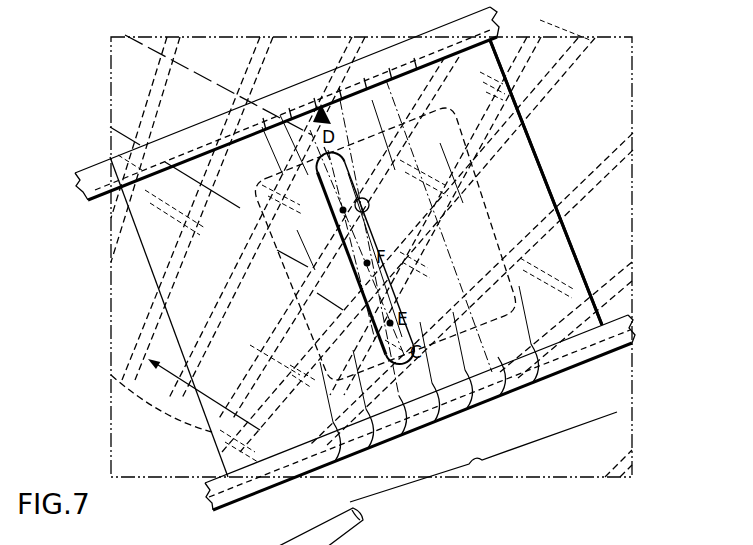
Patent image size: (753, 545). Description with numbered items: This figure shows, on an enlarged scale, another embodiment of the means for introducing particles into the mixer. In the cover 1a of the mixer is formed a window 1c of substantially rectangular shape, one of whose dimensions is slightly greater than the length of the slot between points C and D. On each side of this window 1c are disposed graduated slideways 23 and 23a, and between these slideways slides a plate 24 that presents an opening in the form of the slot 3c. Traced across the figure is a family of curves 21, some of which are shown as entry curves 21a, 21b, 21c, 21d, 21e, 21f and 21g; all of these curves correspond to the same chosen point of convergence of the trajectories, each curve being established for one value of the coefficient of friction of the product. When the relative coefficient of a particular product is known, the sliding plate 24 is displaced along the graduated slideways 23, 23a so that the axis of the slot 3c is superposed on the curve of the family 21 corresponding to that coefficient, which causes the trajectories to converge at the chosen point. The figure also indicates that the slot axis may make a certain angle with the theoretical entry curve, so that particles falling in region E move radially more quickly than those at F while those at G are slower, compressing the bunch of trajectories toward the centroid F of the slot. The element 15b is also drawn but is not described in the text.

The cover 1a is at (632, 130).
The window 1c is at (546, 182).
The slot 3c is at (327, 193).
The shaft 15b is at (340, 508).
The family of curves 21 is at (483, 457).
The entry curve 21a is at (336, 462).
The entry curve 21b is at (370, 449).
The entry curve 21c is at (403, 436).
The entry curve 21d is at (437, 423).
The entry curve 21e is at (470, 409).
The entry curve 21f is at (503, 396).
The entry curve 21g is at (537, 383).
The graduated slideway 23 is at (499, 22).
The graduated slideway 23a is at (629, 323).
The sliding plate 24 is at (537, 157).